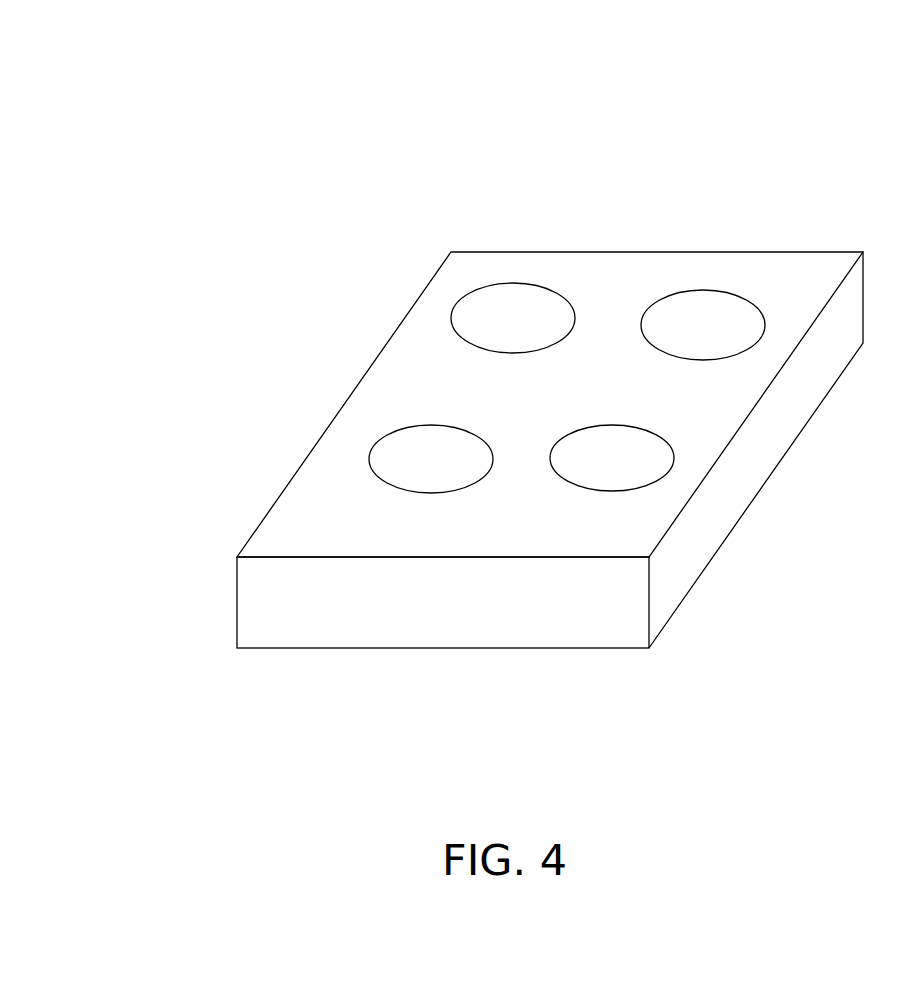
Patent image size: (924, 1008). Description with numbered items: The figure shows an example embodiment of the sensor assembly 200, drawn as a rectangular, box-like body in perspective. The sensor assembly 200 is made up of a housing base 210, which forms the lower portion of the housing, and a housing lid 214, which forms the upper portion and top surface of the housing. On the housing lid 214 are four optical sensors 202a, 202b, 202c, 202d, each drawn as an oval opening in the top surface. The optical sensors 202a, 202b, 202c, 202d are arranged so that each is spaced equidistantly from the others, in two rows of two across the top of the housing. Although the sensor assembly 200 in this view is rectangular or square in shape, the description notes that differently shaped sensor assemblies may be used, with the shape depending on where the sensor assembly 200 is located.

The sensor assembly 200 is at (384, 157).
The housing base 210 is at (463, 618).
The housing lid 214 is at (420, 387).
The optical sensor 202a is at (716, 323).
The optical sensor 202b is at (488, 322).
The optical sensor 202c is at (420, 460).
The optical sensor 202d is at (605, 466).